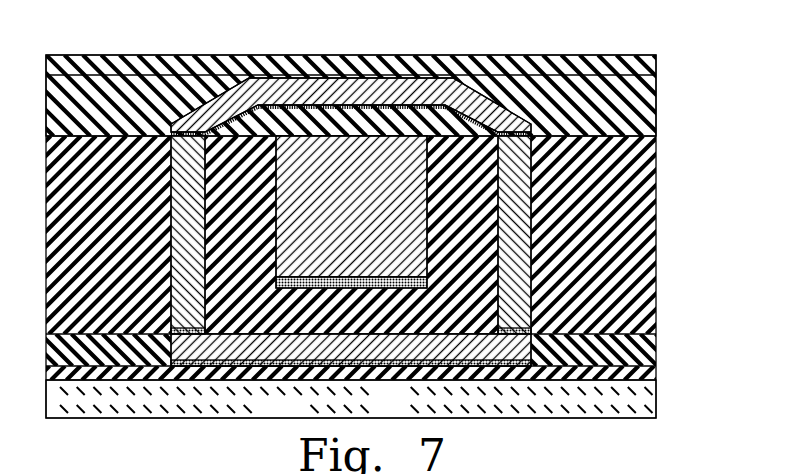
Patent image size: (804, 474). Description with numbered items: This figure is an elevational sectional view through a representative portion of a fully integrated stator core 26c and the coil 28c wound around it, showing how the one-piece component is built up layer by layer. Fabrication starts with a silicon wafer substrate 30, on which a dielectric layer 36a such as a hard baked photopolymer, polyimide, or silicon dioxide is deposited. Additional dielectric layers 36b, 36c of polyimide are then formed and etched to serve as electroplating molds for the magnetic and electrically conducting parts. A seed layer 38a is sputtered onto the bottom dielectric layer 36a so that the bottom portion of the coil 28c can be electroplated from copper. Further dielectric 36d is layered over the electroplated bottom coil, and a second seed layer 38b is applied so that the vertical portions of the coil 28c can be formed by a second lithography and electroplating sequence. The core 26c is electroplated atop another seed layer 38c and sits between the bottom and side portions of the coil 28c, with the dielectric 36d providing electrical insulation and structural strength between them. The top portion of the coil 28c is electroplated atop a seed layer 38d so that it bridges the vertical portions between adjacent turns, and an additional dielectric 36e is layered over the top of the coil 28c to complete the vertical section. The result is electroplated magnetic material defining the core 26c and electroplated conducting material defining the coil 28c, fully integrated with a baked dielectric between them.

The silicon wafer substrate 30 is at (401, 402).
The core 26c is at (366, 212).
The coil 28c is at (362, 97).
The dielectric layer 36a is at (648, 363).
The dielectric layer 36b is at (648, 340).
The dielectric layer 36c is at (648, 216).
The dielectric 36d is at (362, 312).
The dielectric 36e is at (648, 83).
The seed layer 38a is at (525, 354).
The second seed layer 38b is at (163, 323).
The seed layer 38c is at (470, 324).
The seed layer 38d is at (524, 126).